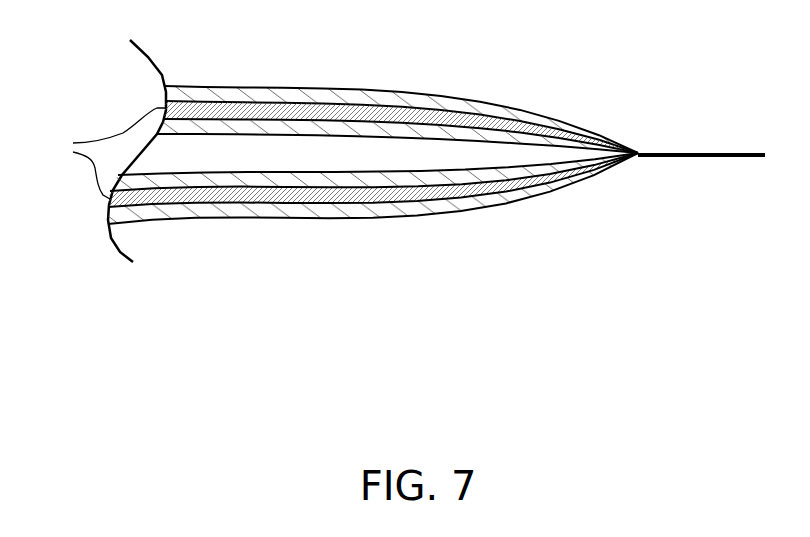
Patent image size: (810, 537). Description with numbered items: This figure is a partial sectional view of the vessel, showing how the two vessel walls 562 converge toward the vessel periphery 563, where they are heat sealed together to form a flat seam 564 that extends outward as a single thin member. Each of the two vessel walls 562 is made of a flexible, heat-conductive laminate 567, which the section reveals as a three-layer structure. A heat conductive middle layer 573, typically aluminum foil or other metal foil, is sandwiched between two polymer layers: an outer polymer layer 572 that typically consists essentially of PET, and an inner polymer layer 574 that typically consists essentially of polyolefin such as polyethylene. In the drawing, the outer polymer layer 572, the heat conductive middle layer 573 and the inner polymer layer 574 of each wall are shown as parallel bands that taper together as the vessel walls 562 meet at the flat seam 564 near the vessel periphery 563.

The vessel walls 562 is at (373, 158).
The vessel periphery 563 is at (766, 158).
The flat seam 564 is at (703, 153).
The heat-conductive laminate 567 is at (95, 153).
The outer polymer layer 572 is at (222, 90).
The heat conductive middle layer 573 is at (302, 113).
The inner polymer layer 574 is at (378, 132).